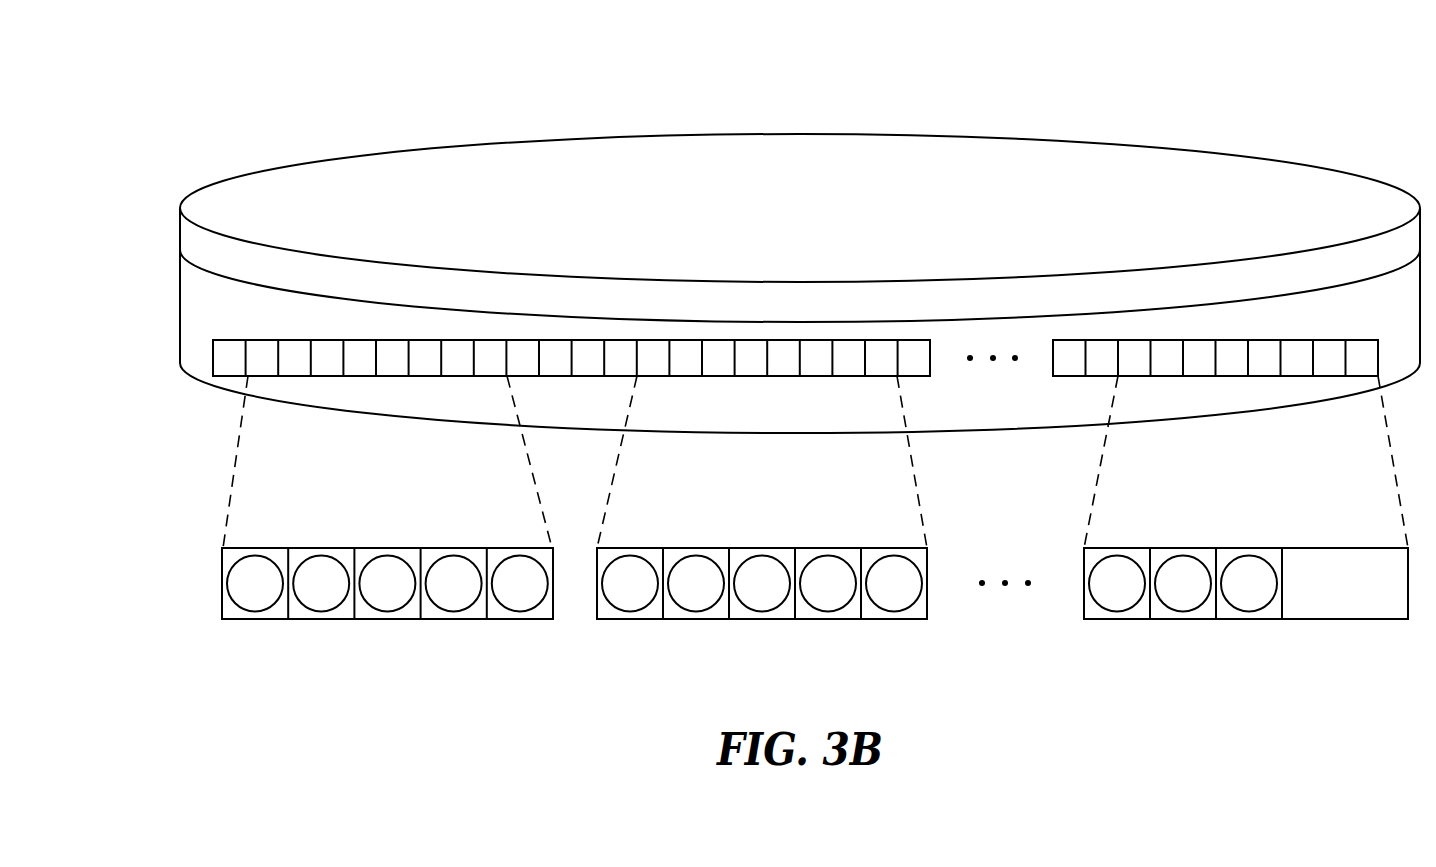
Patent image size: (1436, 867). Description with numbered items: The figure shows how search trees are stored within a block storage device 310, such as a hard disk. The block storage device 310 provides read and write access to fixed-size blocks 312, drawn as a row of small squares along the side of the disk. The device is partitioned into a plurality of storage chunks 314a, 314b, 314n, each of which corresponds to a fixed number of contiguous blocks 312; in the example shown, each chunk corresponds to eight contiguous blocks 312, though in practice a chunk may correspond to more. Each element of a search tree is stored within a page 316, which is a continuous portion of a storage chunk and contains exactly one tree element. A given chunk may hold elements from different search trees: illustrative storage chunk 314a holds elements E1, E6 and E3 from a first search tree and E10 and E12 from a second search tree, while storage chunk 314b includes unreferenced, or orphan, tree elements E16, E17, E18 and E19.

The block storage device 310 is at (820, 219).
The fixed-size blocks 312 is at (213, 362).
The storage chunk 314a is at (381, 543).
The storage chunk 314b is at (724, 496).
The storage chunk 314n is at (1219, 496).
The page 316 is at (228, 620).